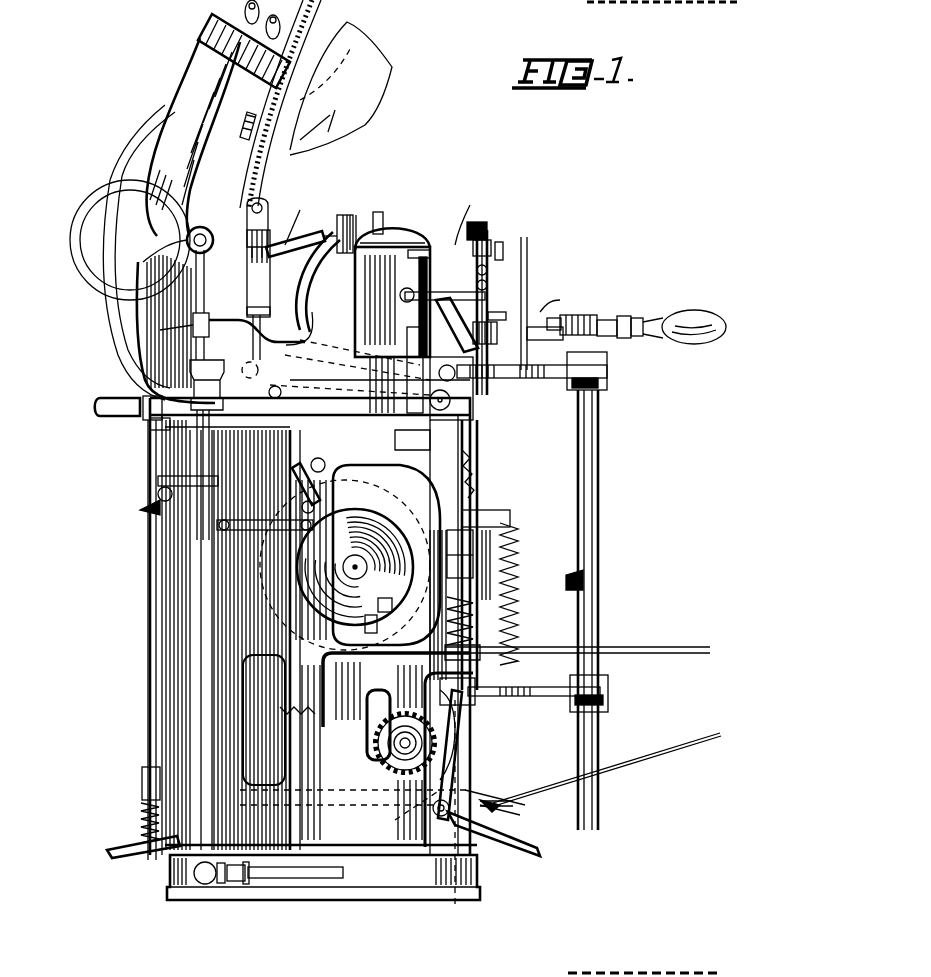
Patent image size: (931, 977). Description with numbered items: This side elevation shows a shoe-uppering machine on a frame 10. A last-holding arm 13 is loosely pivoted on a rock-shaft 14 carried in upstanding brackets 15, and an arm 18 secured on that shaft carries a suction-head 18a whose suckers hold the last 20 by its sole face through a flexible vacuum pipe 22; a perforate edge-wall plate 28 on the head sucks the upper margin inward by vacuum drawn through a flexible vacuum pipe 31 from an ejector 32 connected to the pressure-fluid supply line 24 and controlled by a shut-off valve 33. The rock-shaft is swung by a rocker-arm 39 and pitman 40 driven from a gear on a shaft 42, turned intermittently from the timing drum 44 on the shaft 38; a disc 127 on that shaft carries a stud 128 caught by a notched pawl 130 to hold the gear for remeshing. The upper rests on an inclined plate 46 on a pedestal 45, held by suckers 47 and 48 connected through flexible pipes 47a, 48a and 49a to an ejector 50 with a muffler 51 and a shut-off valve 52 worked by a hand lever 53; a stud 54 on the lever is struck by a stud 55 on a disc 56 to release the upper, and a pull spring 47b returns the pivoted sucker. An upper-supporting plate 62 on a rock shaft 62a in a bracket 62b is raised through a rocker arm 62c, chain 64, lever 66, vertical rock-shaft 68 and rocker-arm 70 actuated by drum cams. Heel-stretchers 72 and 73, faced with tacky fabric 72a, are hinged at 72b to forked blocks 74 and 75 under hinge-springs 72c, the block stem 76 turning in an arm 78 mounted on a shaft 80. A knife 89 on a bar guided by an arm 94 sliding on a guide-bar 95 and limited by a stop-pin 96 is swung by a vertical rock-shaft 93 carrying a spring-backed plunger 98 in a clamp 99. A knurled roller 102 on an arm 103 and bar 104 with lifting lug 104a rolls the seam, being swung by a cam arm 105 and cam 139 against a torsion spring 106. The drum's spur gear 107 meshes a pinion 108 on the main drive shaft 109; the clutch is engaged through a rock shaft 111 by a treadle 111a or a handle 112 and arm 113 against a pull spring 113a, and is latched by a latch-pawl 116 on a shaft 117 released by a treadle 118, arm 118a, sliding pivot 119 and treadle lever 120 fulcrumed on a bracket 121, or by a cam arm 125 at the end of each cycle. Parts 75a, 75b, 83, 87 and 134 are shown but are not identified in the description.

The frame 10 is at (293, 727).
The last-holding arm 13 is at (308, 355).
The rock-shaft 14 is at (192, 240).
The upstanding brackets 15 is at (187, 281).
The arm 18 is at (185, 108).
The suction-head 18a is at (243, 132).
The last 20 is at (388, 66).
The flexible vacuum pipe 22 is at (110, 178).
The pressure-fluid supply line 24 is at (283, 882).
The perforate edge-wall plate 28 is at (318, 60).
The flexible vacuum pipe 31 is at (222, 14).
The ejector 32 is at (152, 426).
The shut-off valve 33 is at (152, 495).
The shaft 38 is at (360, 558).
The rocker-arm 39 is at (225, 222).
The pitman 40 is at (262, 286).
The shaft 42 is at (305, 340).
The timing drum 44 is at (495, 557).
The pedestal 45 is at (191, 322).
The inclined plate 46 is at (340, 214).
The sucker 47 is at (305, 237).
The flexible pipe 47a is at (312, 312).
The pull spring 47b is at (295, 228).
The sucker 48 is at (243, 212).
The flexible pipe 48a is at (190, 328).
The flexible pipe 49a is at (315, 298).
The ejector 50 is at (196, 438).
The muffler 51 is at (200, 641).
The shut-off valve 52 is at (158, 478).
The hand lever 53 is at (375, 385).
The stud 54 is at (310, 505).
The stud 55 is at (377, 628).
The disc 56 is at (392, 603).
The upper-supporting plate 62 is at (392, 277).
The rock shaft 62a is at (395, 243).
The bracket 62b is at (460, 230).
The rocker arm 62c is at (380, 225).
The chain 64 is at (357, 232).
The lever 66 is at (400, 233).
The vertical rock-shaft 68 is at (417, 280).
The rocker-arm 70 is at (404, 448).
The heel-stretcher 72 is at (478, 224).
The fabric 72a is at (490, 240).
The hinge 72b is at (503, 258).
The hinge-spring 72c is at (498, 255).
The heel-stretcher 73 is at (430, 325).
The block 74 is at (488, 272).
The block 75 is at (492, 344).
The pin 75a is at (497, 314).
The link 75b is at (548, 300).
The stem 76 is at (488, 293).
The arm 78 is at (477, 345).
The shaft 80 is at (455, 404).
The collars 83 is at (488, 281).
The bar 87 is at (428, 295).
The knife 89 is at (577, 312).
The vertical rock-shaft 93 is at (463, 436).
The arm 94 is at (530, 342).
The vertical guide-bar 95 is at (596, 318).
The stop-pin 96 is at (588, 672).
The spring-backed plunger 98 is at (465, 518).
The clamp 99 is at (482, 490).
The knurled roller 102 is at (626, 320).
The arm 103 is at (695, 315).
The bar 104 is at (595, 452).
The lifting lug 104a is at (568, 580).
The cam arm 105 is at (445, 560).
The torsion spring 106 is at (478, 624).
The spur gear 107 is at (508, 612).
The pinion 108 is at (475, 707).
The main drive shaft 109 is at (410, 743).
The rock shaft 111 is at (250, 782).
The treadle 111a is at (495, 807).
The handle 112 is at (98, 406).
The arm 113 is at (142, 787).
The pull spring 113a is at (141, 818).
The latch-pawl 116 is at (470, 762).
The shaft 117 is at (470, 795).
The treadle 118 is at (514, 843).
The rearwardly extending arm 118a is at (455, 900).
The sliding pivot 119 is at (452, 857).
The treadle lever 120 is at (128, 856).
The bracket 121 is at (390, 820).
The cam arm 125 is at (452, 732).
The disc 127 is at (190, 362).
The stud 128 is at (264, 307).
The notched pawl 130 is at (190, 404).
The bar 134 is at (263, 470).
The cam 139 is at (372, 492).